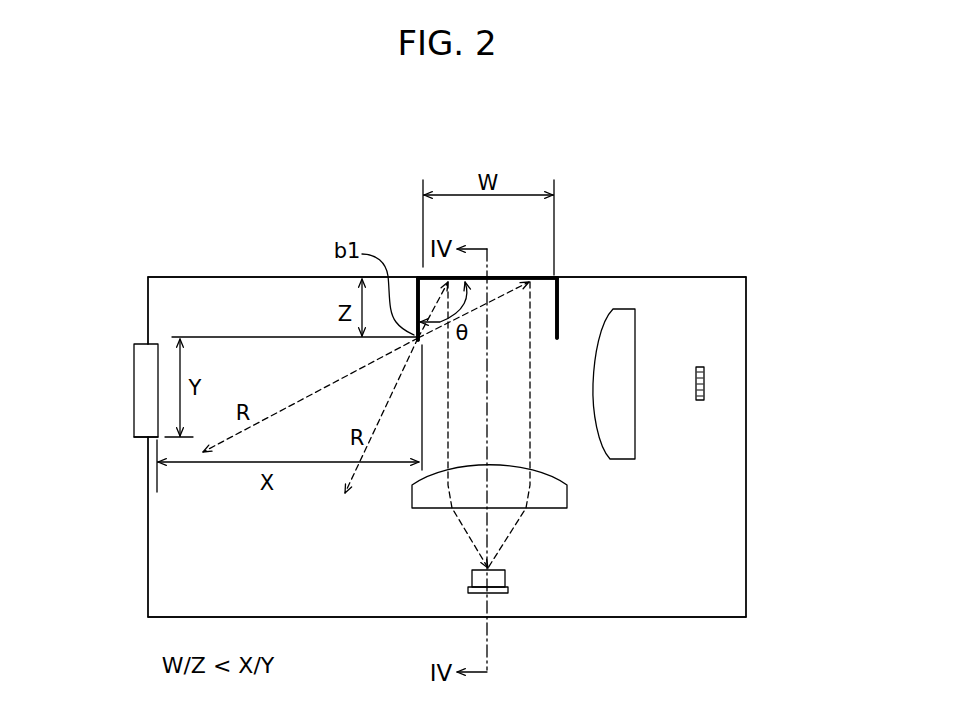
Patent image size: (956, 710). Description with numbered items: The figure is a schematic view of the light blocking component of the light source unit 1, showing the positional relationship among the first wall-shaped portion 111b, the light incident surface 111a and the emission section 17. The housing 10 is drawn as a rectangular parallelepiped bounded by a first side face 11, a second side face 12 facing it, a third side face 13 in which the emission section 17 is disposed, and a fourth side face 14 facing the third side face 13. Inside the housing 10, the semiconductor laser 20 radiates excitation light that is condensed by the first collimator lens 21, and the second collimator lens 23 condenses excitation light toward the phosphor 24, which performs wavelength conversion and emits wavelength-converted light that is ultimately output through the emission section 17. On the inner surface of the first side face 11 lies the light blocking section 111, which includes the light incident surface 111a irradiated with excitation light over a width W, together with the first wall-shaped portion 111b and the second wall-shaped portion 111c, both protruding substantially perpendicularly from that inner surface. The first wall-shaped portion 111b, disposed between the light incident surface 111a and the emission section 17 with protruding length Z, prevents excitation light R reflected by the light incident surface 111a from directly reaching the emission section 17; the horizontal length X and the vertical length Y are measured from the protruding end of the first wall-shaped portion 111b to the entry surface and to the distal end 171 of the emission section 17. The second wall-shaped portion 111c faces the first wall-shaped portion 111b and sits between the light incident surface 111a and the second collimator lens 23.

The light source unit 1 is at (343, 197).
The housing 10 is at (433, 450).
The first side face 11 is at (190, 277).
The second side face 12 is at (603, 618).
The third side face 13 is at (149, 542).
The fourth side face 14 is at (746, 495).
The emission section 17 is at (134, 362).
The distal end 171 is at (150, 438).
The light blocking section 111 is at (531, 275).
The light incident surface 111a is at (504, 278).
The first wall-shaped portion 111b is at (410, 292).
The second wall-shaped portion 111c is at (557, 306).
The semiconductor laser 20 is at (505, 583).
The first collimator lens 21 is at (415, 510).
The second collimator lens 23 is at (623, 311).
The phosphor 24 is at (704, 378).